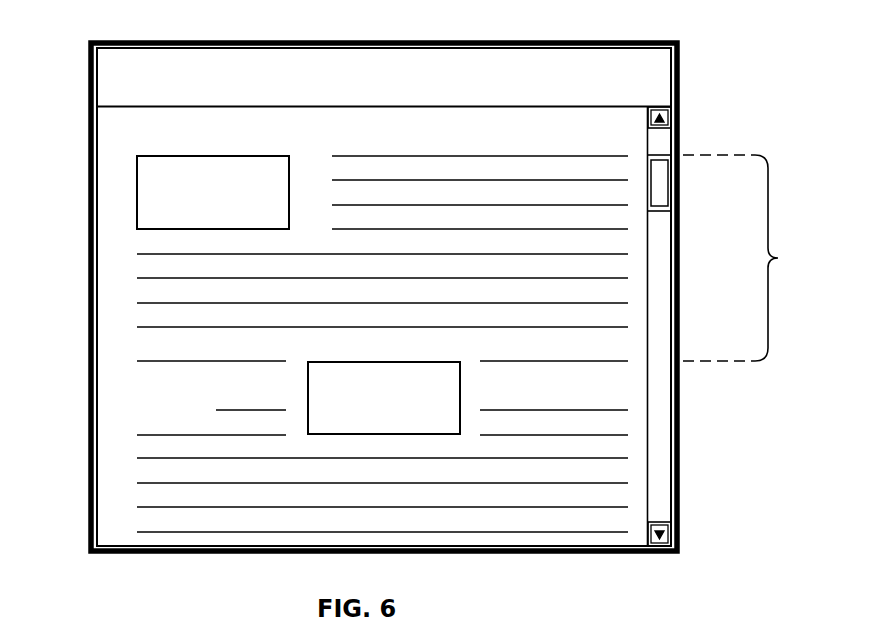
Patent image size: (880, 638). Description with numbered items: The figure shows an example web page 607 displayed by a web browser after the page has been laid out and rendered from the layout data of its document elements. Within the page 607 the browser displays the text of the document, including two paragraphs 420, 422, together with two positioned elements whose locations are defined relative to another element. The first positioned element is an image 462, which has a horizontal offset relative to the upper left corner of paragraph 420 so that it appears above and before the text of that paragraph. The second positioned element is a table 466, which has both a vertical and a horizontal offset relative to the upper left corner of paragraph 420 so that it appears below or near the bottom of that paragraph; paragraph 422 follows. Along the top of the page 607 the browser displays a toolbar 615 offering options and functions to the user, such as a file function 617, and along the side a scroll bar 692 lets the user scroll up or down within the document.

The web page 607 is at (157, 40).
The toolbar 615 is at (309, 59).
The file function 617 is at (107, 78).
The image 462 is at (203, 155).
The table 466 is at (372, 361).
The paragraph 422 is at (77, 411).
The scroll bar 692 is at (660, 342).
The paragraph 420 is at (756, 258).